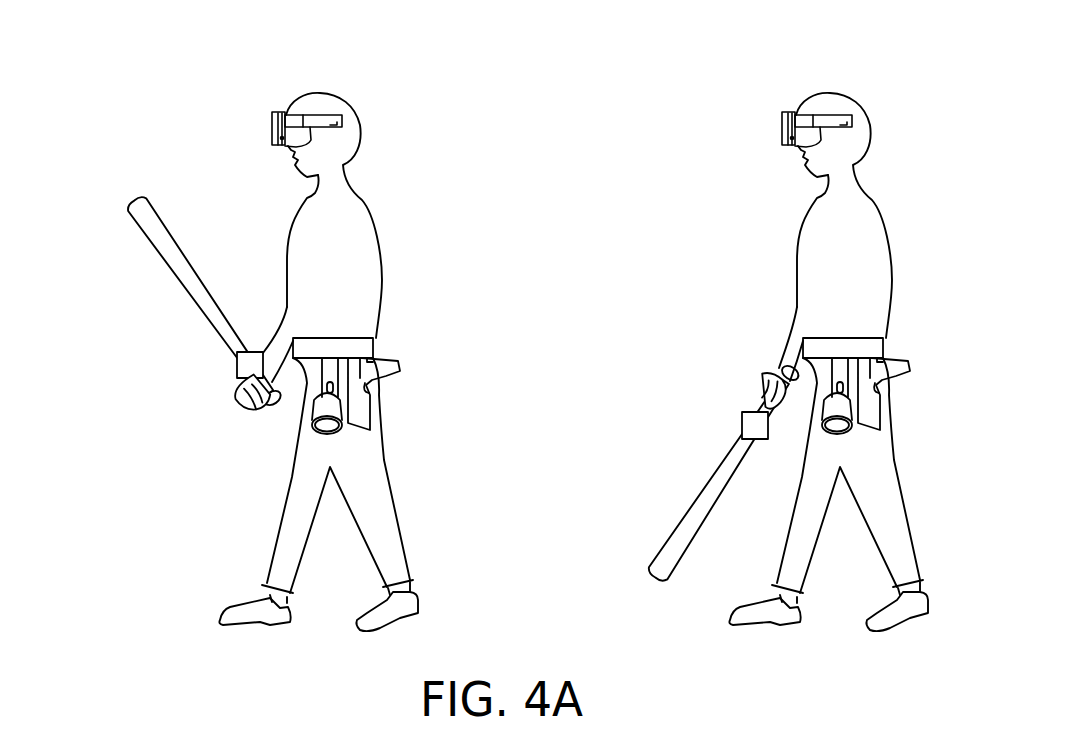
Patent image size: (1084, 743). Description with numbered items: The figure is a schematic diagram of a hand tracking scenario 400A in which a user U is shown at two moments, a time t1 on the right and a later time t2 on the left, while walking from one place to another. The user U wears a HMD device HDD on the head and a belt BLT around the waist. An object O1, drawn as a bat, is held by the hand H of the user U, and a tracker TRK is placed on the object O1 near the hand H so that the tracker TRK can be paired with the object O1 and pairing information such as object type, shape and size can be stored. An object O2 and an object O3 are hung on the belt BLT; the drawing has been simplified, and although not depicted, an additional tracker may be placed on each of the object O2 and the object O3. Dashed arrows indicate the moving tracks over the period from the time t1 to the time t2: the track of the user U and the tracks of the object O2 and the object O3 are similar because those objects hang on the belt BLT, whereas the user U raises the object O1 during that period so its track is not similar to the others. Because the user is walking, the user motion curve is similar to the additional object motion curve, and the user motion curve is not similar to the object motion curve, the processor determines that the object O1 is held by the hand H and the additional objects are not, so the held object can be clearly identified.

The user U is at (347, 98).
The HMD device HDD is at (282, 113).
The belt BLT is at (352, 338).
The object O1 is at (133, 193).
The object O2 is at (337, 438).
The object O3 is at (393, 378).
The hand H is at (250, 420).
The tracker TRK is at (246, 382).
The time t1 is at (827, 92).
The time t2 is at (317, 92).
The hand tracking scenario 400A is at (148, 650).